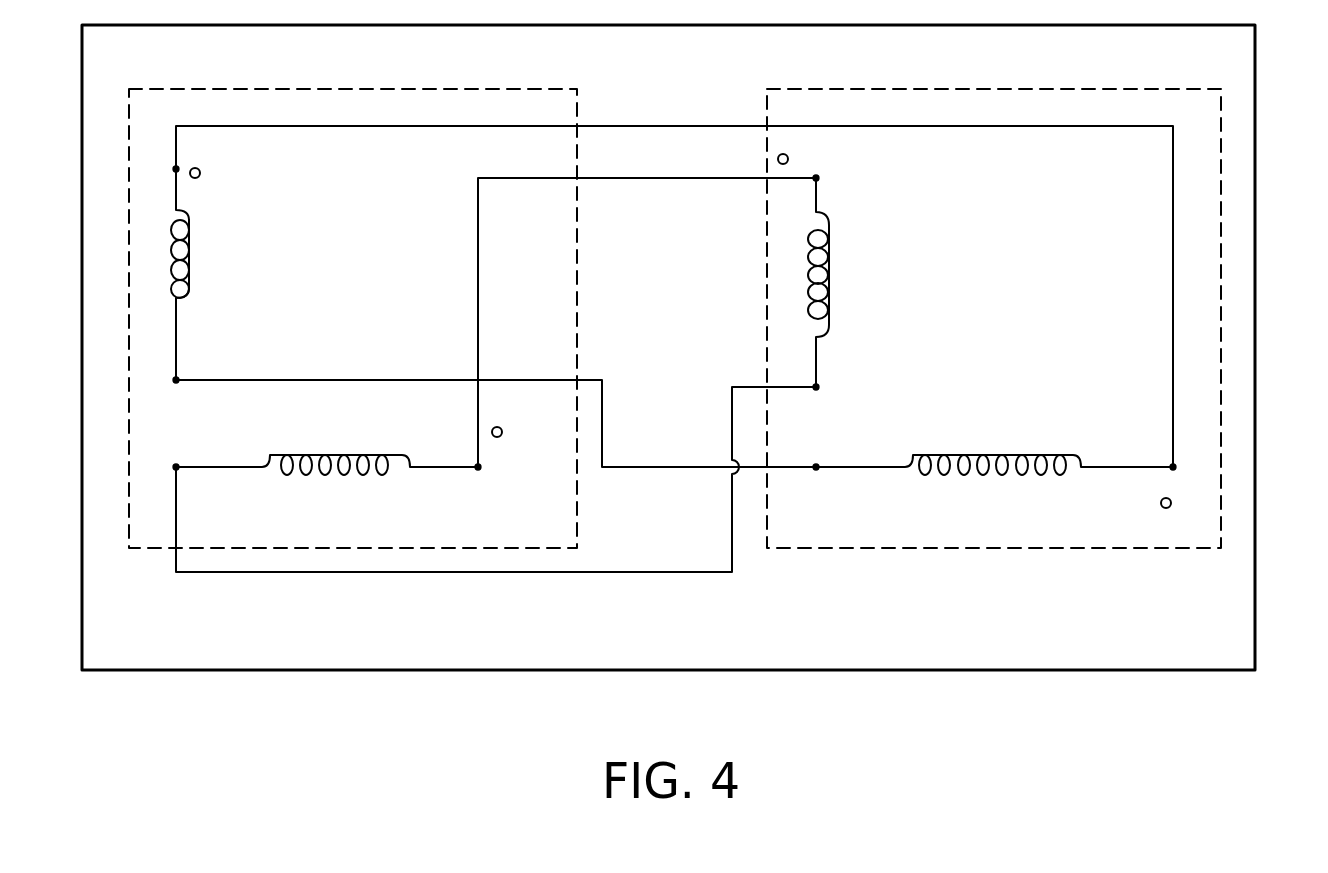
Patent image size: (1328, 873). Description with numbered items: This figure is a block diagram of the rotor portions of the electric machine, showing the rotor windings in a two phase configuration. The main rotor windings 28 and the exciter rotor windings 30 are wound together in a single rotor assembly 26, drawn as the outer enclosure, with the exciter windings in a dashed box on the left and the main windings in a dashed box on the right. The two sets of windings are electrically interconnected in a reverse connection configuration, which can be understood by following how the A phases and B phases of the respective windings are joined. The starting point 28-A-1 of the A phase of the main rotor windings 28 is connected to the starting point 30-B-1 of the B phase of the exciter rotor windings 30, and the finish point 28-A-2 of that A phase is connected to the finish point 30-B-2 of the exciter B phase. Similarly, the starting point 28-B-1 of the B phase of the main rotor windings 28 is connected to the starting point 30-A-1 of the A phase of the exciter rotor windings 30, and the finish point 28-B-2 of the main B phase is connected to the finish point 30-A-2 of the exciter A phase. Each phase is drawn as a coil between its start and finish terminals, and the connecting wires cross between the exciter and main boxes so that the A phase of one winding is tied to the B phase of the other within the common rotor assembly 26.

The rotor assembly 26 is at (327, 670).
The main rotor winding 28 is at (1221, 268).
The exciter rotor winding 30 is at (129, 190).
The starting point of the A phase of the main rotor windings 28-A-1 is at (814, 180).
The finish point of the A phase of the main rotor windings 28-A-2 is at (814, 387).
The starting point of the B phase of the main rotor windings 28-B-1 is at (1172, 466).
The finish point of the B phase of the main rotor windings 28-B-2 is at (822, 467).
The starting point of the A phase of the exciter rotor windings 30-A-1 is at (176, 169).
The finish point of the A phase of the exciter rotor windings 30-A-2 is at (176, 380).
The starting point of the B phase of the exciter rotor windings 30-B-1 is at (476, 466).
The finish point of the B phase of the exciter rotor windings 30-B-2 is at (180, 467).